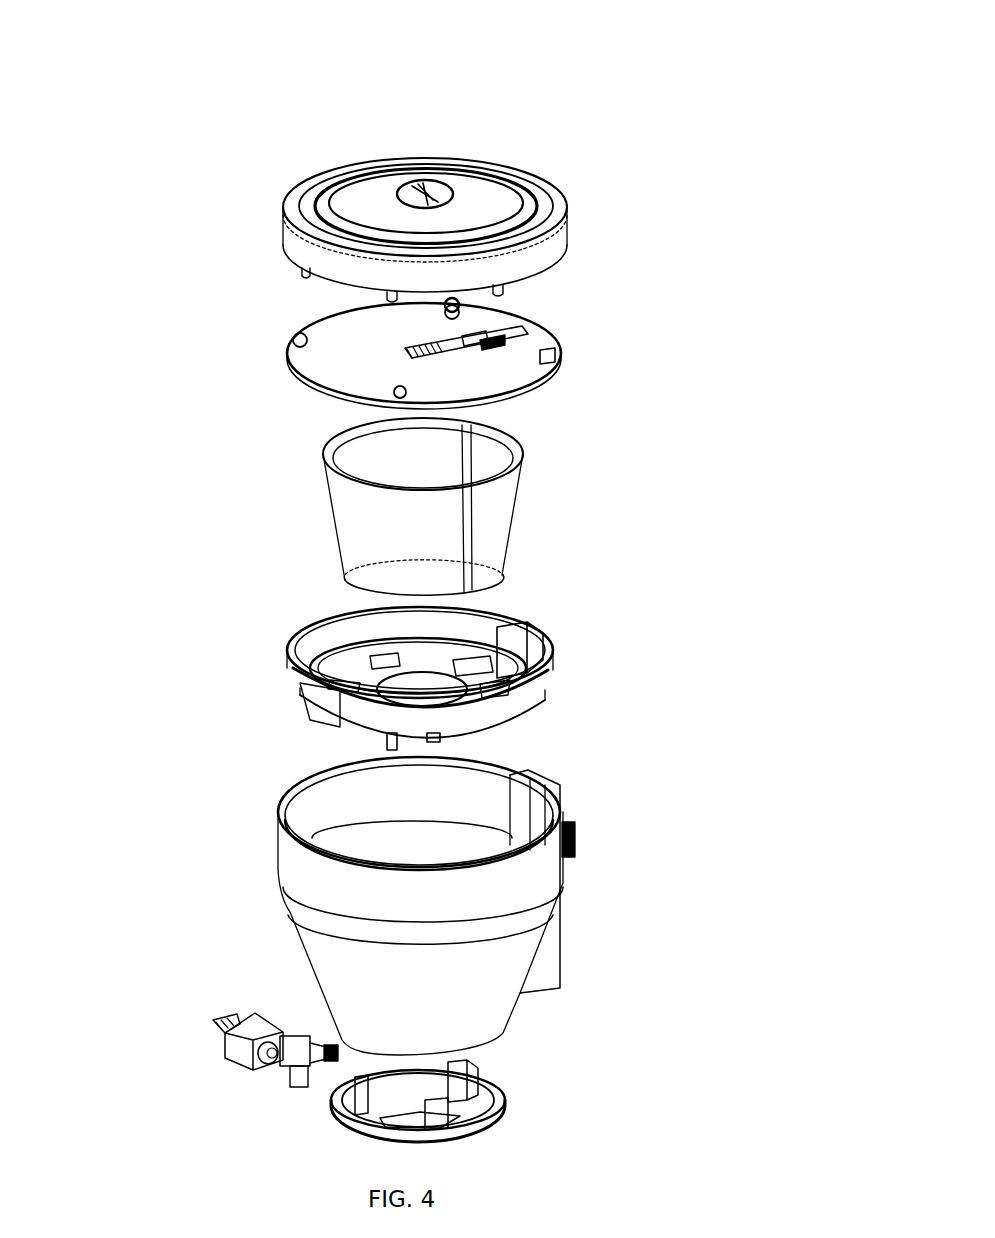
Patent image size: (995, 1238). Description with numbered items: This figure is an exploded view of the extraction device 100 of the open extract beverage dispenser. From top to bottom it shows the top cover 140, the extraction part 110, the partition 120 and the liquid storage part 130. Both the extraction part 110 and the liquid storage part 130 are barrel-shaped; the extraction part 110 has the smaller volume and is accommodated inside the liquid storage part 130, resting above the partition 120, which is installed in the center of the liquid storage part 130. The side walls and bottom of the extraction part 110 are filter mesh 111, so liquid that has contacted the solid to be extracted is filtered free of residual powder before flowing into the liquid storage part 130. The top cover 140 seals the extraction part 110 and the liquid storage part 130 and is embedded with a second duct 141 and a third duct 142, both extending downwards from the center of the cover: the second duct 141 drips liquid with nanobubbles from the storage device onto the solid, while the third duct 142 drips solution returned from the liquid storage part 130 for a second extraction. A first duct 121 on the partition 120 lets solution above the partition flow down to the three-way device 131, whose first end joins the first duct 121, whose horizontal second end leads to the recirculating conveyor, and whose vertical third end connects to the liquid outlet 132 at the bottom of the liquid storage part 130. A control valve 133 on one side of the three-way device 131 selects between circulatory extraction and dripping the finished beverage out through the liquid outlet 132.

The extraction device 100 is at (448, 95).
The extraction part 110 is at (368, 508).
The filter mesh 111 is at (362, 590).
The partition 120 is at (528, 700).
The first duct 121 is at (390, 748).
The liquid storage part 130 is at (538, 866).
The three-way device 131 is at (293, 1058).
The liquid outlet 132 is at (470, 1113).
The control valve 133 is at (252, 1017).
The top cover 140 is at (343, 360).
The second duct 141 is at (472, 341).
The third duct 142 is at (462, 352).